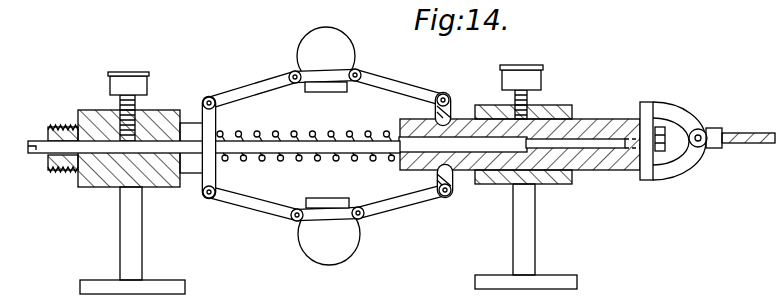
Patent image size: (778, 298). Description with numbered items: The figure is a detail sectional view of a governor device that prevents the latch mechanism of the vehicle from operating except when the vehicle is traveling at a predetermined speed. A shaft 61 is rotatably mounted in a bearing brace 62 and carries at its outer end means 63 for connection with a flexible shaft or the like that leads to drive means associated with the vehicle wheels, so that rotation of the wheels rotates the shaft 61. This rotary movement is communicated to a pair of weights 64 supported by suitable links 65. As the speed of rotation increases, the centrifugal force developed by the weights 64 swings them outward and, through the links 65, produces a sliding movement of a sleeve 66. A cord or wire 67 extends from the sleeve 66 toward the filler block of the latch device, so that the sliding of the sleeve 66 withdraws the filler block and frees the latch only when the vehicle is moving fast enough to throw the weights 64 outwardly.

The shaft 61 is at (93, 188).
The bearing brace 62 is at (155, 187).
The connection means 63 is at (34, 133).
The weights 64 is at (341, 47).
The links 65 is at (240, 91).
The sleeve 66 is at (585, 125).
The cord or wire 67 is at (727, 133).